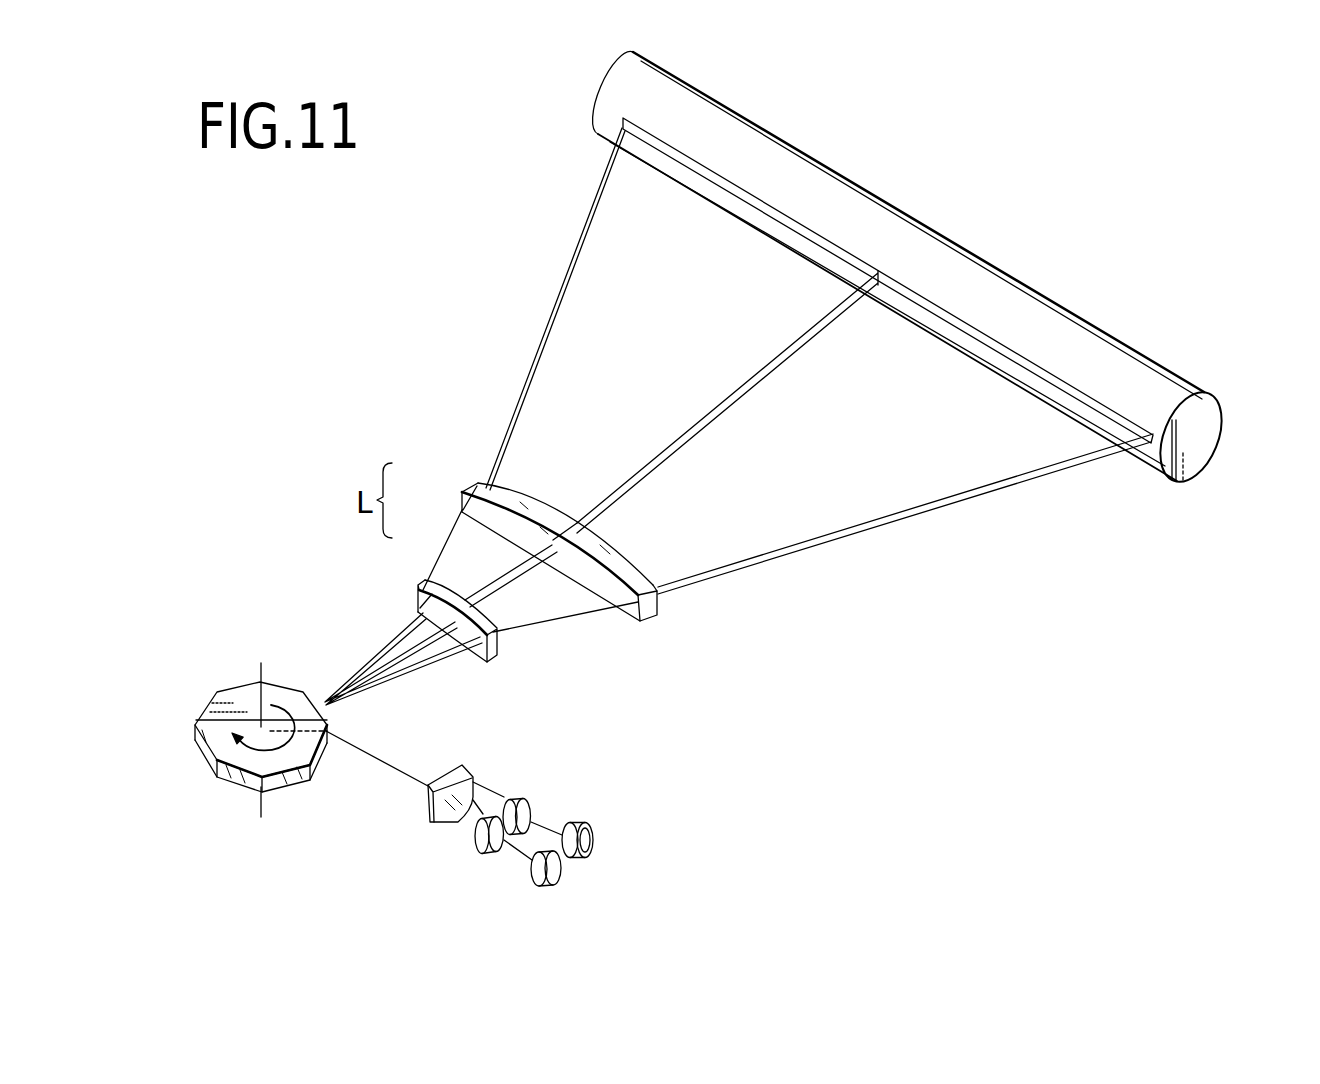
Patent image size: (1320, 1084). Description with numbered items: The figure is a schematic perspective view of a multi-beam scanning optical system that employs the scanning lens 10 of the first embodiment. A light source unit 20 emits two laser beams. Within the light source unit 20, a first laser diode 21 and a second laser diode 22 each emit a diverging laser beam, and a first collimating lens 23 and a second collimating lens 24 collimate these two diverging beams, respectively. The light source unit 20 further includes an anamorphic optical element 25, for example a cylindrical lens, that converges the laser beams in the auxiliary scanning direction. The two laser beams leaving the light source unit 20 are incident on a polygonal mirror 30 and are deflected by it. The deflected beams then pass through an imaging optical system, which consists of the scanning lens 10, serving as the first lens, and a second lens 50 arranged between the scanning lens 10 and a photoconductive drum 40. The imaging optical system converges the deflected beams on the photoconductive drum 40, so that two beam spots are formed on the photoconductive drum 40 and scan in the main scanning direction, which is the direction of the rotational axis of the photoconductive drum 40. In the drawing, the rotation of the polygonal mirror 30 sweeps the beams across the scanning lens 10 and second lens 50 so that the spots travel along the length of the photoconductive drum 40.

The scanning lens 10 is at (438, 585).
The light source unit 20 is at (487, 847).
The first laser diode 21 is at (524, 881).
The second laser diode 22 is at (578, 822).
The first collimating lens 23 is at (480, 845).
The second collimating lens 24 is at (520, 798).
The anamorphic optical element 25 is at (427, 808).
The polygonal mirror 30 is at (245, 693).
The photoconductive drum 40 is at (879, 214).
The second lens 50 is at (462, 505).